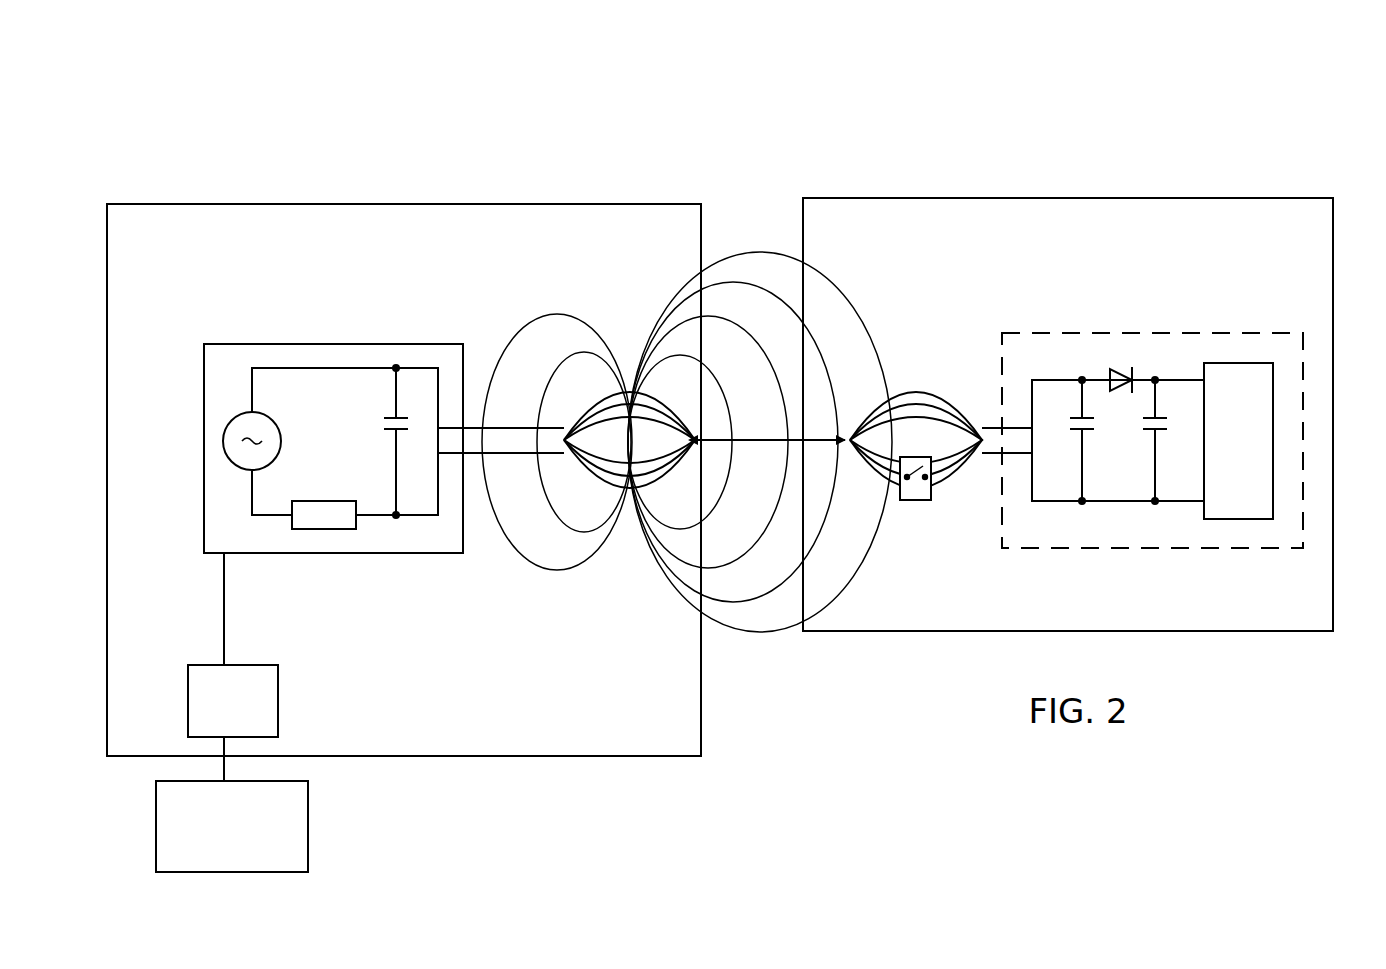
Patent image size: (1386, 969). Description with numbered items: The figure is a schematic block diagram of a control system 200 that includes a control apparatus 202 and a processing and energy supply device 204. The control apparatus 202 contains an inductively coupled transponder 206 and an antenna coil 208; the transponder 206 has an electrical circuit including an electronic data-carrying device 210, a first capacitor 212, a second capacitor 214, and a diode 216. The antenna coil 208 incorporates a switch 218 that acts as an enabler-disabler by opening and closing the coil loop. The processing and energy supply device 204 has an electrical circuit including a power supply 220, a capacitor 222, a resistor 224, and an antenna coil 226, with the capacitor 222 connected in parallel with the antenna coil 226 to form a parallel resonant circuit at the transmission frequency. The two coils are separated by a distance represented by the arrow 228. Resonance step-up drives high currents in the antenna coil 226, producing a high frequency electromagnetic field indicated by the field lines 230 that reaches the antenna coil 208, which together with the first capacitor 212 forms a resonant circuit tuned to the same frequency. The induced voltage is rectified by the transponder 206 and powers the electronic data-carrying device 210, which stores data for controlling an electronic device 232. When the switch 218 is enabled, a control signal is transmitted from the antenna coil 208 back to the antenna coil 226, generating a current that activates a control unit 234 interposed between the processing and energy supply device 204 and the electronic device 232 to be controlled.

The control system 200 is at (992, 142).
The control apparatus 202 is at (1060, 190).
The processing and energy supply device 204 is at (363, 201).
The transponder 206 is at (1122, 550).
The antenna coil 208 is at (917, 390).
The electronic data-carrying device 210 is at (1238, 373).
The first capacitor 212 is at (1068, 424).
The second capacitor 214 is at (1166, 422).
The diode 216 is at (1113, 366).
The switch 218 is at (913, 500).
The power supply 220 is at (268, 422).
The capacitor 222 is at (382, 424).
The resistor 224 is at (321, 529).
The antenna coil 226 is at (630, 385).
The arrow 228 is at (745, 433).
The field lines 230 is at (750, 622).
The electronic device to be controlled 232 is at (308, 818).
The control unit 234 is at (280, 700).